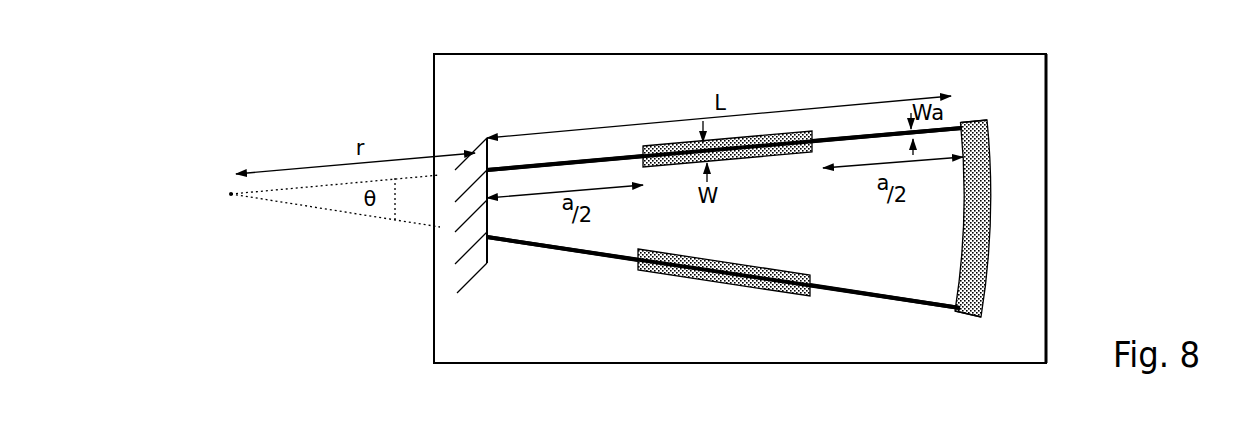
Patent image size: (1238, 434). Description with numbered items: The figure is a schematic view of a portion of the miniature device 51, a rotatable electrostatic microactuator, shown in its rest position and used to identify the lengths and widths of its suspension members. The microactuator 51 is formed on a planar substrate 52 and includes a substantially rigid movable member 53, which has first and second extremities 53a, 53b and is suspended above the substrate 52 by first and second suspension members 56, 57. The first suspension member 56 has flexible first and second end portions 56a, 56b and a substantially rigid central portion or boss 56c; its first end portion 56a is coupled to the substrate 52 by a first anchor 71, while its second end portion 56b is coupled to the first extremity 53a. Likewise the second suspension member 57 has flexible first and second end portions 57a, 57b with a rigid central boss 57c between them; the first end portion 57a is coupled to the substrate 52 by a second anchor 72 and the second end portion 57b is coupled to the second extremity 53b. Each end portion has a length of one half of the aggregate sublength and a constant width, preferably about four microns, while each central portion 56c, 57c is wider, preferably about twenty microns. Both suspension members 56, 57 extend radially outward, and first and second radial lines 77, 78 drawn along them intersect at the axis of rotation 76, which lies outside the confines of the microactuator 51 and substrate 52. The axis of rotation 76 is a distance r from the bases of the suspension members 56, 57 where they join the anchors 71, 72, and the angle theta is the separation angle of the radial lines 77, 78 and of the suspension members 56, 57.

The miniature device 51 is at (1060, 85).
The planar substrate 52 is at (1047, 142).
The movable member 53 is at (1020, 229).
The first extremity of movable member 53a is at (993, 142).
The second extremity of movable member 53b is at (990, 292).
The first suspension member 56 is at (742, 115).
The first end portion of first suspension member 56a is at (558, 158).
The second end portion of first suspension member 56b is at (953, 130).
The central portion or boss of first suspension member 56c is at (767, 138).
The second suspension member 57 is at (723, 297).
The first end portion of second suspension member 57a is at (582, 258).
The second end portion of second suspension member 57b is at (893, 303).
The central portion or boss of second suspension member 57c is at (668, 278).
The first anchor 71 is at (466, 195).
The second anchor 72 is at (473, 277).
The axis of rotation 76 is at (231, 197).
The first radial line 77 is at (310, 187).
The second radial line 78 is at (320, 210).